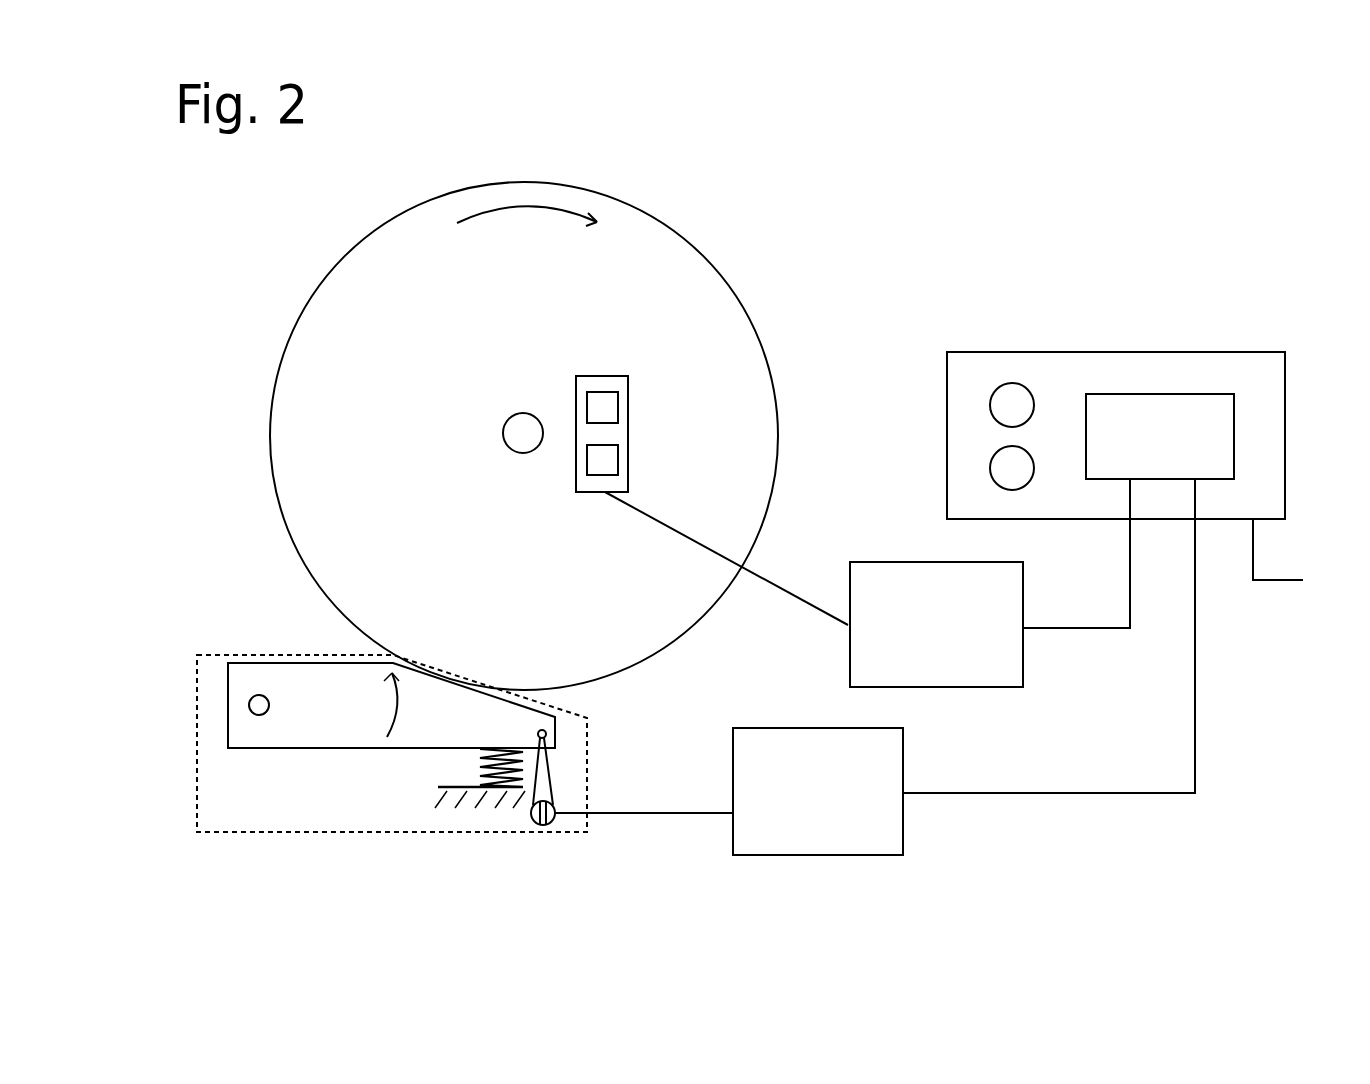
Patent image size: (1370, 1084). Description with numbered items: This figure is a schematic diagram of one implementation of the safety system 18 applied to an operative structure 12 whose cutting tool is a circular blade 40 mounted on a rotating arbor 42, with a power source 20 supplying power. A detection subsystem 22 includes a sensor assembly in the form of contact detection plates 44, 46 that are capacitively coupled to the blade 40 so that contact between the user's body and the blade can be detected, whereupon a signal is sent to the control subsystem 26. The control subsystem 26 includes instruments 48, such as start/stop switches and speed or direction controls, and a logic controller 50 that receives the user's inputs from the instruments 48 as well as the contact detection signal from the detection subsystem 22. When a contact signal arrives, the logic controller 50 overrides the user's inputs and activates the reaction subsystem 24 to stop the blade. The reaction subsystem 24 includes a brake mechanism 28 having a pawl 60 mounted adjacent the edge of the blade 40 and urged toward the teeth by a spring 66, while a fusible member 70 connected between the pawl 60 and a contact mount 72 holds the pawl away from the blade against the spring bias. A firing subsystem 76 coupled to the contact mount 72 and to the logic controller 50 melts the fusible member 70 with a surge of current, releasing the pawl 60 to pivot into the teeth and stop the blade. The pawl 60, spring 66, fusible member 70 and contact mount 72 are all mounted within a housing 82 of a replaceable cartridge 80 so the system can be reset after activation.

The operative structure 12 is at (760, 202).
The safety system 18 is at (1095, 245).
The power source 20 is at (1328, 560).
The detection subsystem 22 is at (959, 605).
The reaction subsystem 24 is at (850, 897).
The control subsystem 26 is at (1162, 352).
The brake mechanism 28 is at (465, 738).
The circular blade 40 is at (390, 303).
The arbor 42 is at (510, 440).
The contact detection plate 44 is at (612, 402).
The contact detection plate 46 is at (612, 455).
The instruments 48 is at (1000, 471).
The logic controller 50 is at (1172, 442).
The pawl 60 is at (285, 675).
The spring 66 is at (463, 768).
The fusible member 70 is at (553, 787).
The contact mount 72 is at (537, 823).
The firing subsystem 76 is at (877, 773).
The replaceable cartridge 80 is at (376, 790).
The housing 82 is at (300, 835).